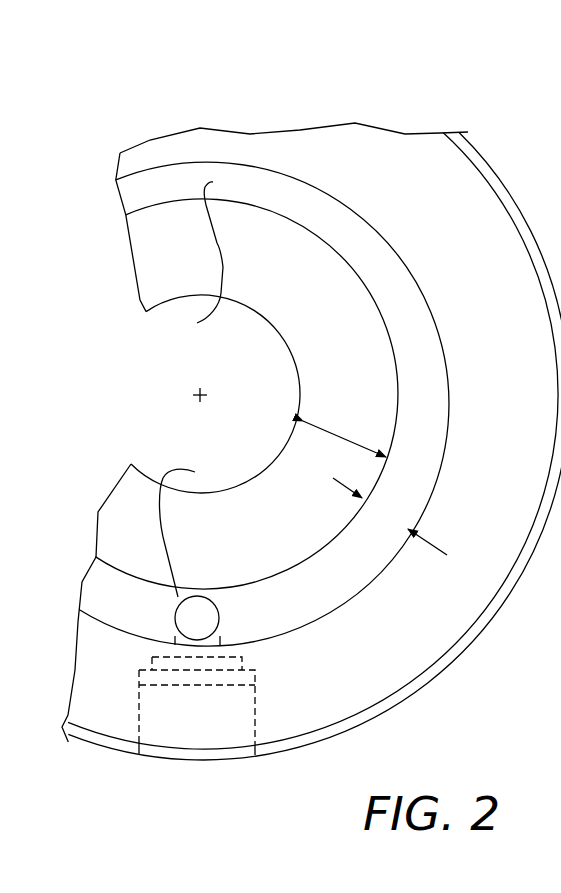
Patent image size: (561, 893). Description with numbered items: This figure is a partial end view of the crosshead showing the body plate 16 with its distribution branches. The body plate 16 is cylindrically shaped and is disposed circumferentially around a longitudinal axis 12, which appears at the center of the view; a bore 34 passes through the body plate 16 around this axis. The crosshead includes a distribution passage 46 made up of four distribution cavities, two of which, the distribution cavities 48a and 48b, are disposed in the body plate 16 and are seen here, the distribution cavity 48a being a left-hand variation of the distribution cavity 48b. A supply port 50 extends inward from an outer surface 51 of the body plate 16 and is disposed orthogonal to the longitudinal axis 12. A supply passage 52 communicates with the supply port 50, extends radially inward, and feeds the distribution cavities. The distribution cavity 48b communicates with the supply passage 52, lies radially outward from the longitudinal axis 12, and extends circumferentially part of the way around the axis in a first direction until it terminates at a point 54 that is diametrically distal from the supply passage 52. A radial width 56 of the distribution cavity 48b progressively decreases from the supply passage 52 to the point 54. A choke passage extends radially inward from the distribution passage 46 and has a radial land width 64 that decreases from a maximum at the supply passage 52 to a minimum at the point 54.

The longitudinal axis 12 is at (205, 390).
The body plate 16 is at (484, 681).
The bore 34 is at (296, 362).
The distribution passage 46 is at (355, 589).
The distribution cavity 48a is at (167, 626).
The distribution cavity 48b is at (293, 626).
The supply port 50 is at (178, 760).
The outer surface 51 is at (268, 757).
The supply passage 52 is at (192, 530).
The point 54 is at (192, 261).
The radial width 56 is at (391, 516).
The radial land width 64 is at (340, 432).